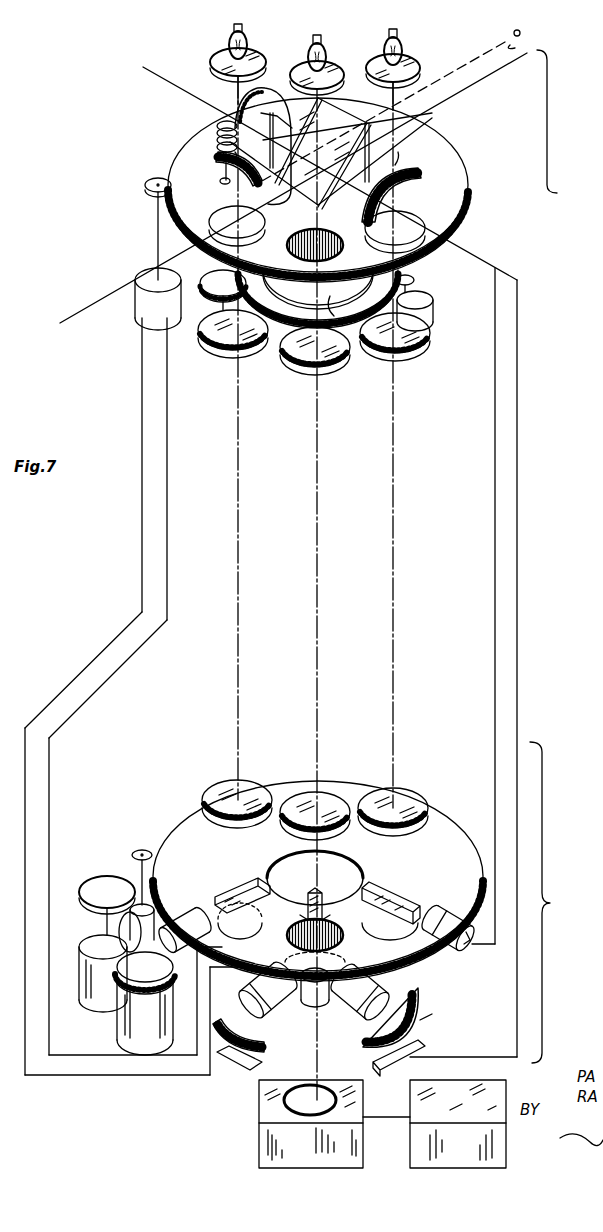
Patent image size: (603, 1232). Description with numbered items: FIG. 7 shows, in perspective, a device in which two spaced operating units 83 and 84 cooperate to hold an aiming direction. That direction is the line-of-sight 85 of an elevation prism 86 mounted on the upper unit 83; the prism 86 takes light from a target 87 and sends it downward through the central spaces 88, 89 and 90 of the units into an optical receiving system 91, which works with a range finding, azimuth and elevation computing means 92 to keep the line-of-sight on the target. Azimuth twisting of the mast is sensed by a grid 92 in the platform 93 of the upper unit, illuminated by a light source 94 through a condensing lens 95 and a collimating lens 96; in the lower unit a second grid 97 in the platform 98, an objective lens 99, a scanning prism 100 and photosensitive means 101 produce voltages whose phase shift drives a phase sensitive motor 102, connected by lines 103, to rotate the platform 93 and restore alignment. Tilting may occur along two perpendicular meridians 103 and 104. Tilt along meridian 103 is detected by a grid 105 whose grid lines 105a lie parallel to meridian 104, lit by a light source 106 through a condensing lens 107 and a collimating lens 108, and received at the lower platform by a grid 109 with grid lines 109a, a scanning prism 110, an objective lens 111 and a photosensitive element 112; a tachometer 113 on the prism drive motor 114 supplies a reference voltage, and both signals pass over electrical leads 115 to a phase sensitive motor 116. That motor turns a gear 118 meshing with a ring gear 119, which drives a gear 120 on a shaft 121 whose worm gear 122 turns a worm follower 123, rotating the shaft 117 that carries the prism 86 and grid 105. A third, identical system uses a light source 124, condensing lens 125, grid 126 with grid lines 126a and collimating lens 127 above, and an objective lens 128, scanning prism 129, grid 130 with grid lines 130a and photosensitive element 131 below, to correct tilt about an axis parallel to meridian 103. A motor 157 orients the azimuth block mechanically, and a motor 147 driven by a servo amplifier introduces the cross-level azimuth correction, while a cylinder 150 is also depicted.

The operating unit 83 is at (559, 127).
The operating unit 84 is at (553, 902).
The line-of-sight 85 is at (522, 48).
The elevation prism 86 is at (340, 118).
The target 87 is at (514, 33).
The space 88 is at (290, 211).
The space 89 is at (292, 300).
The space 90 is at (345, 863).
The optical receiving system 91 is at (262, 1143).
The grid 92 is at (338, 248).
The platform 93 is at (462, 185).
The light source 94 is at (322, 42).
The condensing lens 95 is at (328, 65).
The collimating lens 96 is at (296, 363).
The second grid 97 is at (340, 936).
The platform 98 is at (446, 830).
The objective lens 99 is at (322, 802).
The scanning prism 100 is at (322, 906).
The photosensitive means 101 is at (385, 975).
The phase sensitive motor 102 is at (137, 313).
The lines / meridian 103 is at (480, 86).
The meridian 104 is at (143, 67).
The grid 105 is at (405, 178).
The grid lines 105a is at (400, 168).
The light source 106 is at (398, 40).
The condensing lens 107 is at (418, 65).
The collimating lens 108 is at (420, 333).
The grid 109 is at (424, 1003).
The grid lines 109a is at (422, 1016).
The scanning prism 110 is at (388, 897).
The objective lens 111 is at (410, 802).
The photosensitive element 112 is at (418, 1058).
The tachometer 113 is at (462, 948).
The prism drive motor 114 is at (440, 916).
The electrical leads 115 is at (517, 445).
The phase sensitive motor 116 is at (420, 300).
The shaft 117 is at (370, 152).
The gear 118 is at (410, 281).
The ring gear 119 is at (345, 318).
The gear 120 is at (222, 300).
The shaft 121 is at (215, 272).
The worm gear 122 is at (220, 120).
The worm follower 123 is at (280, 80).
The light source 124 is at (233, 32).
The condensing lens 125 is at (222, 58).
The grid 126 is at (215, 182).
The grid lines 126a is at (236, 163).
The collimating lens 127 is at (218, 340).
The objective lens 128 is at (214, 795).
The scanning prism 129 is at (245, 884).
The grid 130 is at (230, 1060).
The grid lines 130a is at (272, 1008).
The photosensitive element 131 is at (254, 1062).
The motor 147 is at (150, 1040).
The drive cylinder 150 is at (195, 918).
The motor 157 is at (110, 998).